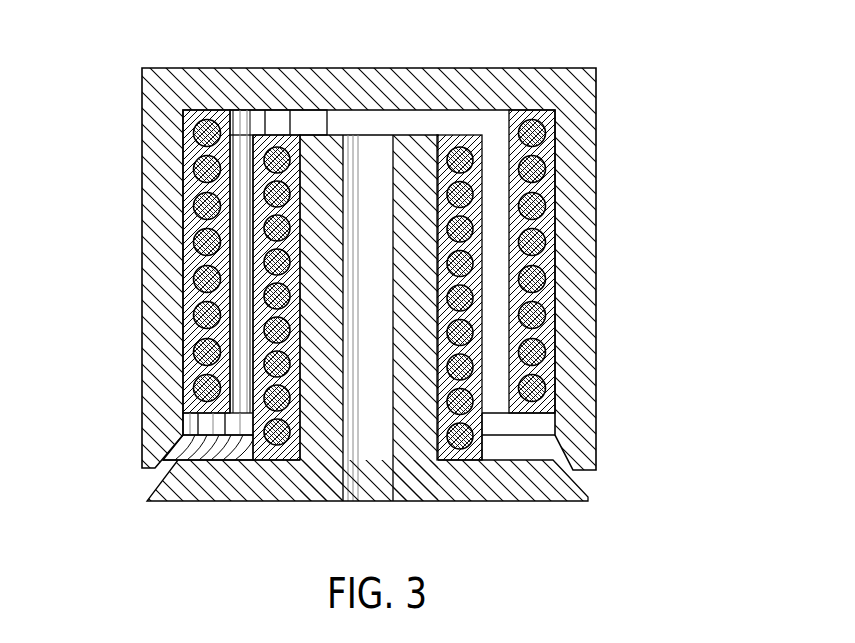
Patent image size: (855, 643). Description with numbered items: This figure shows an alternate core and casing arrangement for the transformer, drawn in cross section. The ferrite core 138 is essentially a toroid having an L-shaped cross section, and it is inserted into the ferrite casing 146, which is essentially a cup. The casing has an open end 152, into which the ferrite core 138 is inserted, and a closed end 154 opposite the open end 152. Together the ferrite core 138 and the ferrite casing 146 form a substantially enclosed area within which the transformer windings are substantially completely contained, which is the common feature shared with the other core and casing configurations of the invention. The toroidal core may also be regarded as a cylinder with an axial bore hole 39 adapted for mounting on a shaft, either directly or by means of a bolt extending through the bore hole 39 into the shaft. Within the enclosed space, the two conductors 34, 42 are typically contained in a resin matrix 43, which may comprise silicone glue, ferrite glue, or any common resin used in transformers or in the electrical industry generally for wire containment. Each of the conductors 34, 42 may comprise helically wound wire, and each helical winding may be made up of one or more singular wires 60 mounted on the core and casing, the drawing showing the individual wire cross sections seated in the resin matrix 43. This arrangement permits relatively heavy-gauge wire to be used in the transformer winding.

The closed end 154 is at (138, 90).
The ferrite casing 146 is at (268, 78).
The open end 152 is at (600, 474).
The resin matrix 43 is at (185, 330).
The conductor 34 is at (277, 450).
The bore hole 39 is at (378, 492).
The ferrite core 138 is at (531, 492).
The conductor 42 is at (553, 163).
The singular wire 60 is at (545, 278).